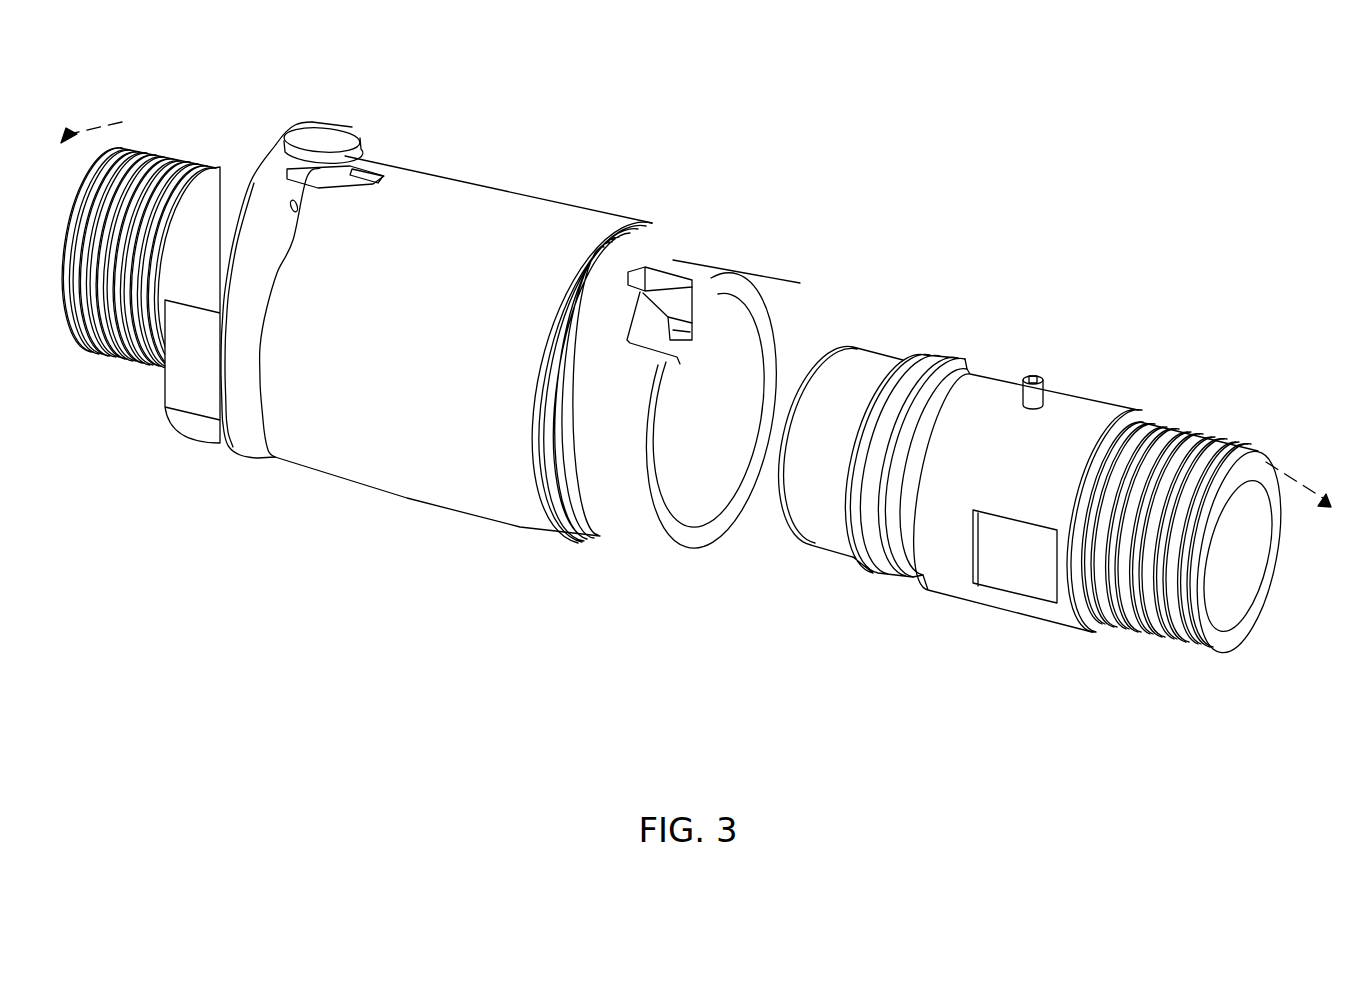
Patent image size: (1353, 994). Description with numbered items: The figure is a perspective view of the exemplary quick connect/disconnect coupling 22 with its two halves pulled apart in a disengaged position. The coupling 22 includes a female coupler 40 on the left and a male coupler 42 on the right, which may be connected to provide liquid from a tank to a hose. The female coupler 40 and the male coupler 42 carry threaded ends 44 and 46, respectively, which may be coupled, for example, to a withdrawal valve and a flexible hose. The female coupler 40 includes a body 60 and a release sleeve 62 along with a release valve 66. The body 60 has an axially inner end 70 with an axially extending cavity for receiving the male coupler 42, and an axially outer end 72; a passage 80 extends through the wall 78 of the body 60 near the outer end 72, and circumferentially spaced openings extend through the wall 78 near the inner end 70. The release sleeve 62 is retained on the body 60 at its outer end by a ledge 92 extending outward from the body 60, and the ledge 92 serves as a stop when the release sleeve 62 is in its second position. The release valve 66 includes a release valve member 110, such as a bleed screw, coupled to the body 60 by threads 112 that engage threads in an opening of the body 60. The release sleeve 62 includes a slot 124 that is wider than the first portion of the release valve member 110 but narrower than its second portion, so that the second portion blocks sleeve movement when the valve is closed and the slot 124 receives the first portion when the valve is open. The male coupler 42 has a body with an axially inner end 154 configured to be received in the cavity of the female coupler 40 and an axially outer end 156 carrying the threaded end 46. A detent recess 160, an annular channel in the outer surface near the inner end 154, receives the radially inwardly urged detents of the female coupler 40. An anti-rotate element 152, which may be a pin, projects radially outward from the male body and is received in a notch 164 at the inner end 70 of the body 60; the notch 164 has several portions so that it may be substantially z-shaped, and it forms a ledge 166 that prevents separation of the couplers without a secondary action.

The quick connect/disconnect coupling 22 is at (683, 379).
The female coupler 40 is at (344, 309).
The male coupler 42 is at (1036, 504).
The threaded end 44 is at (126, 247).
The threaded end 46 is at (1170, 425).
The body 60 is at (620, 513).
The release sleeve 62 is at (560, 201).
The release valve 66 is at (431, 113).
The axially inner end 70 is at (747, 369).
The axially outer end 72 is at (125, 148).
The wall 78 is at (262, 440).
The passage 80 is at (293, 198).
The ledge 92 is at (240, 446).
The release valve member 110 is at (338, 134).
The threads 112 is at (323, 183).
The slot 124 is at (374, 180).
The anti-rotate element 152 is at (1034, 372).
The axially inner end 154 is at (770, 505).
The axially outer end 156 is at (1205, 652).
The detent recess 160 is at (893, 557).
The notch 164 is at (660, 277).
The ledge 166 is at (670, 307).